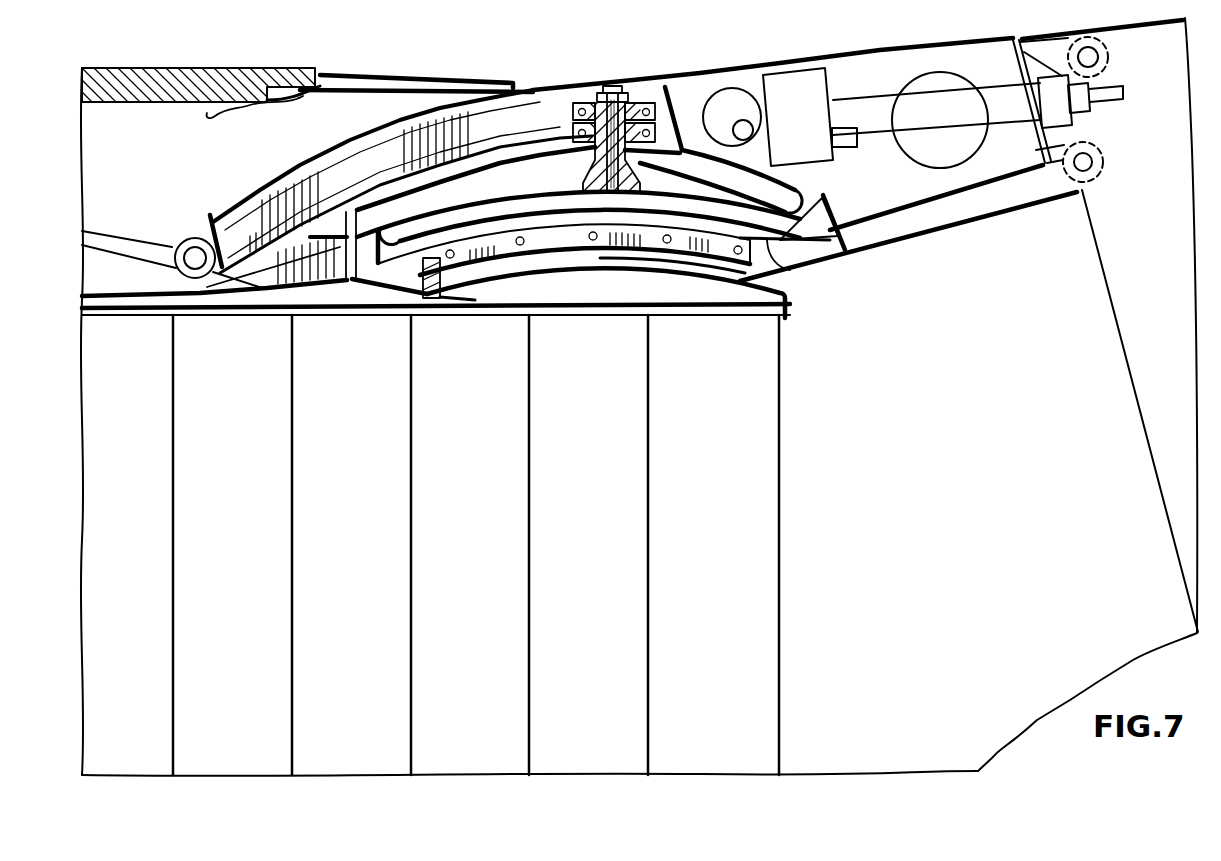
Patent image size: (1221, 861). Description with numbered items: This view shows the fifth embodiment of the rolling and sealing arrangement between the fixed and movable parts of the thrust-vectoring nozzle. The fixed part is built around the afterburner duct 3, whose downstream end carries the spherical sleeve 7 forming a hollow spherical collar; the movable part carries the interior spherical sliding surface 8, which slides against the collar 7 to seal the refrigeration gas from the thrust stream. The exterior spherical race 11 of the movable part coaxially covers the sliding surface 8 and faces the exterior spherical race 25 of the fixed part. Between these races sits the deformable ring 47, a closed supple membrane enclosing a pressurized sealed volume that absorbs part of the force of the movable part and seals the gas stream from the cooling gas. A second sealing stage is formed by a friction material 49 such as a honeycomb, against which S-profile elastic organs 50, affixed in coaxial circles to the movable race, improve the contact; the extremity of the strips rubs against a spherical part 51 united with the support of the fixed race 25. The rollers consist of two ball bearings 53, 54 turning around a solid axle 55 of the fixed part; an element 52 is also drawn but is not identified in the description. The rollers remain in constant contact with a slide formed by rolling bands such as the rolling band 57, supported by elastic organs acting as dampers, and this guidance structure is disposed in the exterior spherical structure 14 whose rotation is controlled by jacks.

The afterburner duct 3 is at (263, 292).
The spherical sleeve 7 is at (687, 267).
The spherical sliding surface 8 is at (720, 273).
The exterior spherical race 11 is at (797, 273).
The exterior spherical structure 14 is at (447, 105).
The exterior spherical race of the fixed part 25 is at (462, 208).
The deformable ring 47 is at (392, 250).
The friction material 49 is at (520, 257).
The elastic organs 50 is at (597, 258).
The spherical part 51 is at (449, 302).
The bolt 52 is at (636, 92).
The ball bearing 53 is at (575, 103).
The ball bearing 54 is at (572, 135).
The solid axle 55 is at (637, 170).
The rolling band 57 is at (267, 207).